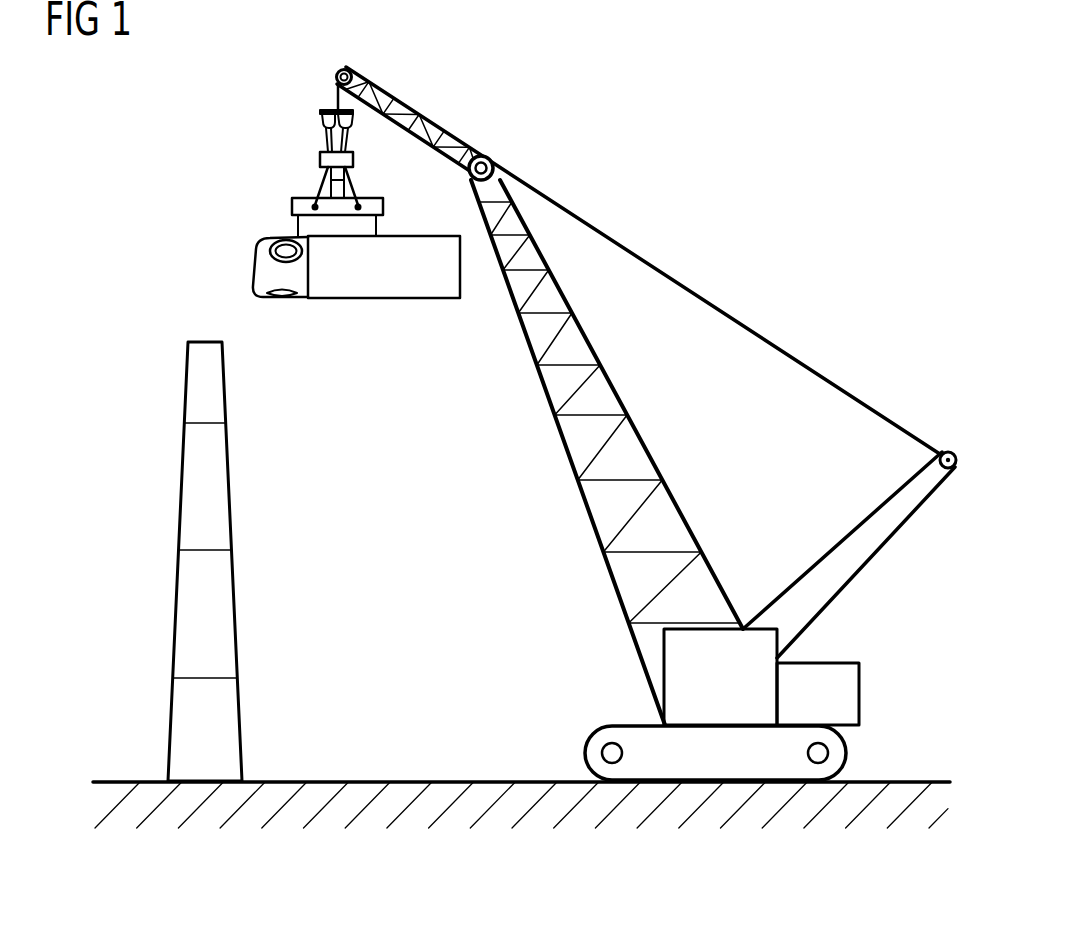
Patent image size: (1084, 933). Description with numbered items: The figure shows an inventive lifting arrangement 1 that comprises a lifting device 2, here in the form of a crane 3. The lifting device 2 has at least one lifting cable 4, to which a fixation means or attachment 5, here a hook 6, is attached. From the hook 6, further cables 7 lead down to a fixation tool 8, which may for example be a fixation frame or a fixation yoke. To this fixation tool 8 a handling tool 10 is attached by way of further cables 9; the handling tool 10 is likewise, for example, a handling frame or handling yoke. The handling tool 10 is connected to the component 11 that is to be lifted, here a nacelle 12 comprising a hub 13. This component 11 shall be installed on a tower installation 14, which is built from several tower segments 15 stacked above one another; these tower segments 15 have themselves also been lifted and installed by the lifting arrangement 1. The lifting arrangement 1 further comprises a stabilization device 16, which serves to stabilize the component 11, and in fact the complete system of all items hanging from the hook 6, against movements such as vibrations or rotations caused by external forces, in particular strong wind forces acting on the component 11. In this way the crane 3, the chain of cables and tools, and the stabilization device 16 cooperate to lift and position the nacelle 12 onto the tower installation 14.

The lifting arrangement 1 is at (705, 150).
The lifting device 2 is at (515, 458).
The crane 3 is at (645, 437).
The lifting cable 4 is at (337, 103).
The fixation means or attachment 5 is at (292, 112).
The hook 6 is at (347, 127).
The further cables 7 is at (320, 140).
The fixation tool 8 is at (323, 163).
The further cables 9 is at (352, 183).
The handling tool 10 is at (377, 207).
The component 11 is at (447, 327).
The nacelle 12 is at (403, 282).
The hub 13 is at (277, 299).
The tower installation 14 is at (188, 561).
The tower segments 15 is at (212, 393).
The stabilization device 16 is at (338, 190).